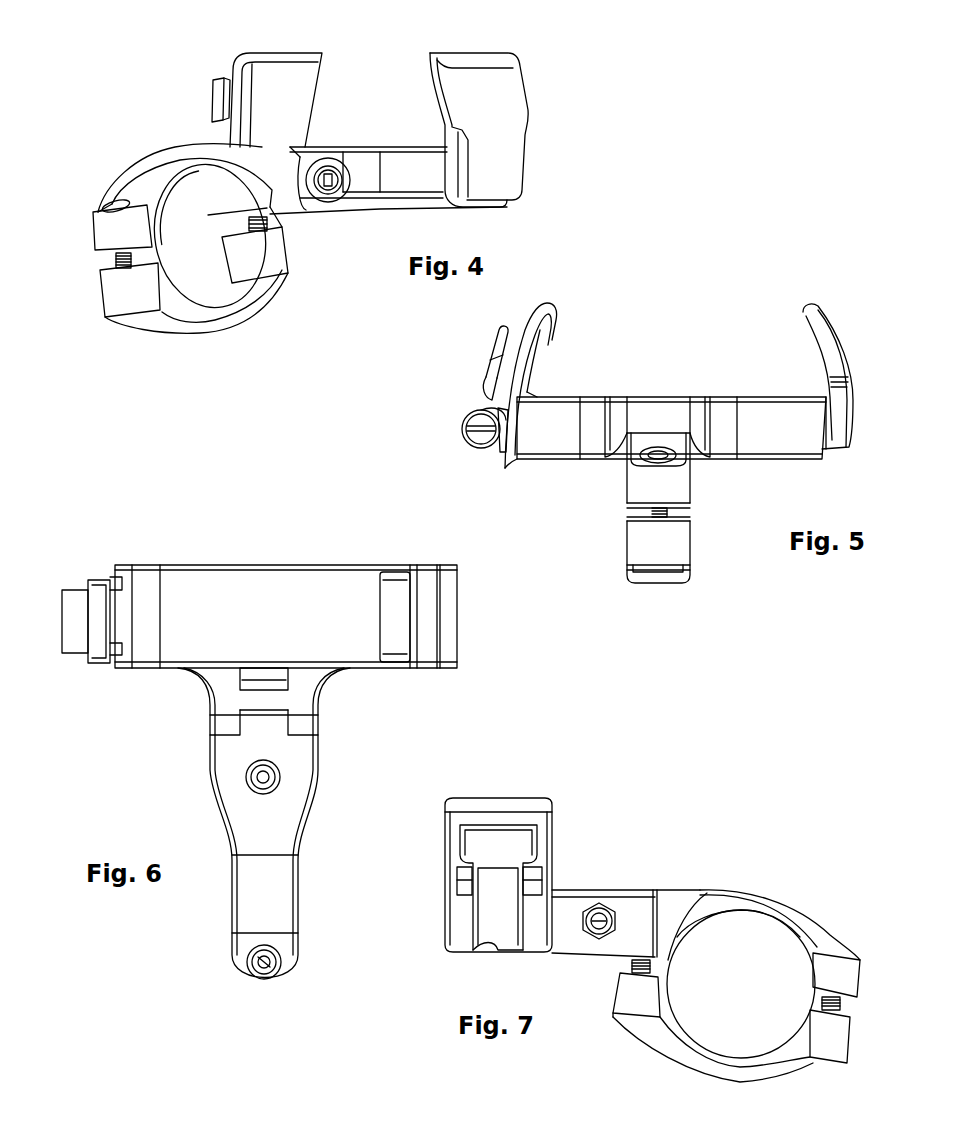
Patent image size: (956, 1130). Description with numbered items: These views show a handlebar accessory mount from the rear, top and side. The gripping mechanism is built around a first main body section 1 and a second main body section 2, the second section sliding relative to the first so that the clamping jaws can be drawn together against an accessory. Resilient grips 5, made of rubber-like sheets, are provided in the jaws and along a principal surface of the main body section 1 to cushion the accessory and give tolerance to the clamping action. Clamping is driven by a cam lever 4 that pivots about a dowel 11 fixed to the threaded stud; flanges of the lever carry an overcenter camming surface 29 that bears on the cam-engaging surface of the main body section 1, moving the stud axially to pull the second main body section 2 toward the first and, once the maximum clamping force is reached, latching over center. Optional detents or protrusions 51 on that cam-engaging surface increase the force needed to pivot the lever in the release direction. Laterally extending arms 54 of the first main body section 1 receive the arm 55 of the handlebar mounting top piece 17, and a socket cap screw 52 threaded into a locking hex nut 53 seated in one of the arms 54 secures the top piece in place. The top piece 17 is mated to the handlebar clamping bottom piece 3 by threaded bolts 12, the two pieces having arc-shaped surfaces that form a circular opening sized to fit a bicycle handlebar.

In FIG. 4, the first main body section 1 is at (415, 165).
In FIG. 5, the first main body section 1 is at (570, 400).
In FIG. 6, the first main body section 1 is at (150, 580).
In FIG. 7, the first main body section 1 is at (485, 800).
In FIG. 4, the second main body section 2 is at (500, 120).
In FIG. 5, the second main body section 2 is at (808, 302).
In FIG. 6, the second main body section 2 is at (448, 585).
In FIG. 4, the handlebar clamping bottom piece 3 is at (258, 292).
In FIG. 5, the handlebar clamping bottom piece 3 is at (677, 532).
In FIG. 7, the handlebar clamping bottom piece 3 is at (825, 1040).
In FIG. 4, the cam lever 4 is at (215, 82).
In FIG. 5, the cam lever 4 is at (480, 350).
In FIG. 6, the cam lever 4 is at (95, 585).
In FIG. 7, the cam lever 4 is at (470, 857).
In FIG. 4, the resilient grips 5 is at (300, 92).
In FIG. 5, the resilient grips 5 is at (560, 318).
In FIG. 6, the resilient grips 5 is at (208, 572).
In FIG. 5, the dowel 11 is at (462, 440).
In FIG. 4, the threaded bolts 12 is at (115, 260).
In FIG. 5, the threaded bolts 12 is at (635, 510).
In FIG. 6, the threaded bolts 12 is at (250, 778).
In FIG. 7, the threaded bolts 12 is at (655, 972).
In FIG. 4, the handlebar mounting top piece 17 is at (143, 158).
In FIG. 5, the handlebar mounting top piece 17 is at (672, 492).
In FIG. 6, the handlebar mounting top piece 17 is at (270, 905).
In FIG. 7, the handlebar mounting top piece 17 is at (780, 895).
In FIG. 5, the overcenter camming surface 29 is at (505, 455).
In FIG. 7, the overcenter camming surface 29 is at (465, 950).
In FIG. 6, the detents or protrusions 51 is at (110, 660).
In FIG. 7, the detents or protrusions 51 is at (535, 845).
In FIG. 4, the socket cap screw 52 is at (334, 188).
In FIG. 7, the socket cap screw 52 is at (605, 914).
In FIG. 7, the locking hex nut 53 is at (590, 940).
In FIG. 4, the laterally extending arms 54 is at (330, 212).
In FIG. 6, the laterally extending arms 54 is at (218, 688).
In FIG. 7, the laterally extending arms 54 is at (567, 893).
In FIG. 6, the arm 55 is at (278, 725).